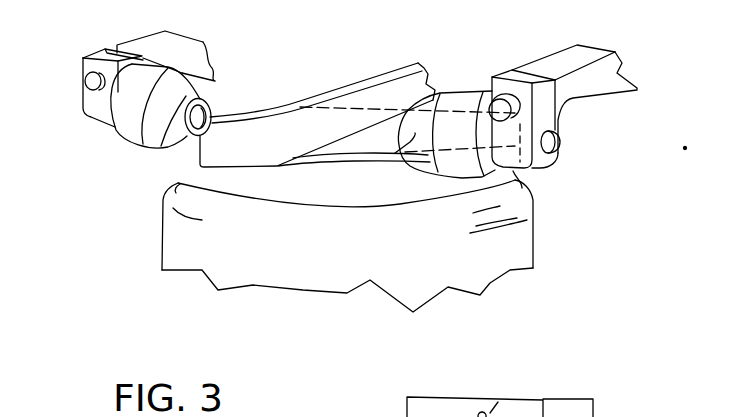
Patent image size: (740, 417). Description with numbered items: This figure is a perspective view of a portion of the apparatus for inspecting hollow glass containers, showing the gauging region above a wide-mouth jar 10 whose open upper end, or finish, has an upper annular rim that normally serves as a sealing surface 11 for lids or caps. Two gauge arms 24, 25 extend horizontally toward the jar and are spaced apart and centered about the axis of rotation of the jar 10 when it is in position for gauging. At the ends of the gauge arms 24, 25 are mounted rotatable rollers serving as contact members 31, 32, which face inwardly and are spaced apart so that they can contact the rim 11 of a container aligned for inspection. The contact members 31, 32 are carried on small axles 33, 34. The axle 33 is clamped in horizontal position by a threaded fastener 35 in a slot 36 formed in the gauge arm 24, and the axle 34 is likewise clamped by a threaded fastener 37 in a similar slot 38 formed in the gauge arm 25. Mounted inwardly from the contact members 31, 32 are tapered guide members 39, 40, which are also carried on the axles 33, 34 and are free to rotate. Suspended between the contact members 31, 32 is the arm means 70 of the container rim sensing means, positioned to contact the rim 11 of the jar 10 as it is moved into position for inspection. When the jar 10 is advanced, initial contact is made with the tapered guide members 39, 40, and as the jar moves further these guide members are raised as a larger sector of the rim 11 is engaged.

The jar 10 is at (358, 277).
The sealing surface 11 is at (252, 105).
The gauge arm 24 is at (614, 96).
The gauge arm 25 is at (193, 67).
The contact member 31 is at (471, 97).
The contact member 32 is at (120, 127).
The axle 33 is at (561, 143).
The axle 34 is at (192, 117).
The threaded fastener 35 is at (502, 104).
The slot 36 is at (528, 77).
The threaded fastener 37 is at (95, 87).
The slot 38 is at (108, 50).
The tapered guide member 39 is at (413, 160).
The tapered guide member 40 is at (136, 144).
The arm means 70 is at (305, 154).